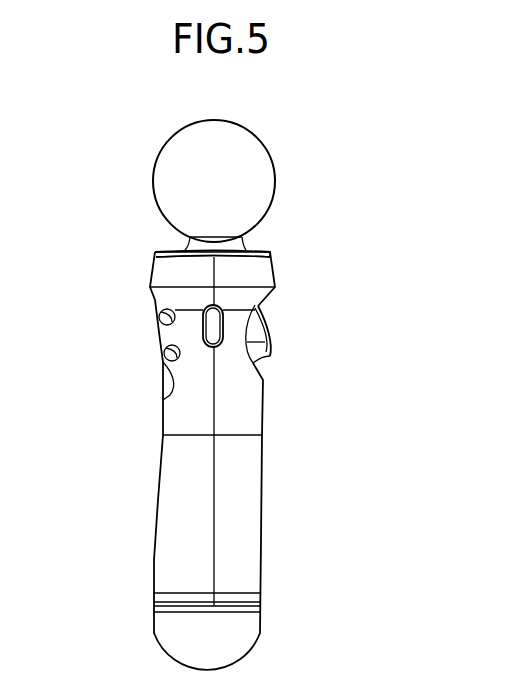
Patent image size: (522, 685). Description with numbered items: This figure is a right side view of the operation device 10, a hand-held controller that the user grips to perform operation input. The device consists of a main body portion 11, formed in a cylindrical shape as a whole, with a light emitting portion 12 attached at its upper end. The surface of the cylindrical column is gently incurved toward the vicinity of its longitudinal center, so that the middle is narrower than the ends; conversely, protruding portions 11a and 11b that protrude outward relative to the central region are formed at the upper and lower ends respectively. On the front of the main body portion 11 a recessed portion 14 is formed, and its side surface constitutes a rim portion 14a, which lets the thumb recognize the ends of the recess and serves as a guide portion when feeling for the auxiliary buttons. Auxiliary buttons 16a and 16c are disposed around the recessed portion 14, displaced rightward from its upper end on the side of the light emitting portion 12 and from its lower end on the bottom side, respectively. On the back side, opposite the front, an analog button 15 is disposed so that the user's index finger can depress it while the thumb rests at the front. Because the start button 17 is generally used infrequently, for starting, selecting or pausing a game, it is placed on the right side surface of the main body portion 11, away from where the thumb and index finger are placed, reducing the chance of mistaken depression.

The operation device 10 is at (313, 462).
The main body portion 11 is at (157, 530).
The protruding portion 11a is at (154, 262).
The protruding portion 11b is at (155, 636).
The light emitting portion 12 is at (276, 180).
The recessed portion 14 is at (145, 336).
The rim portion 14a is at (162, 368).
The analog button 15 is at (270, 345).
The auxiliary button 16a is at (156, 304).
The auxiliary button 16c is at (168, 362).
The start button 17 is at (217, 348).